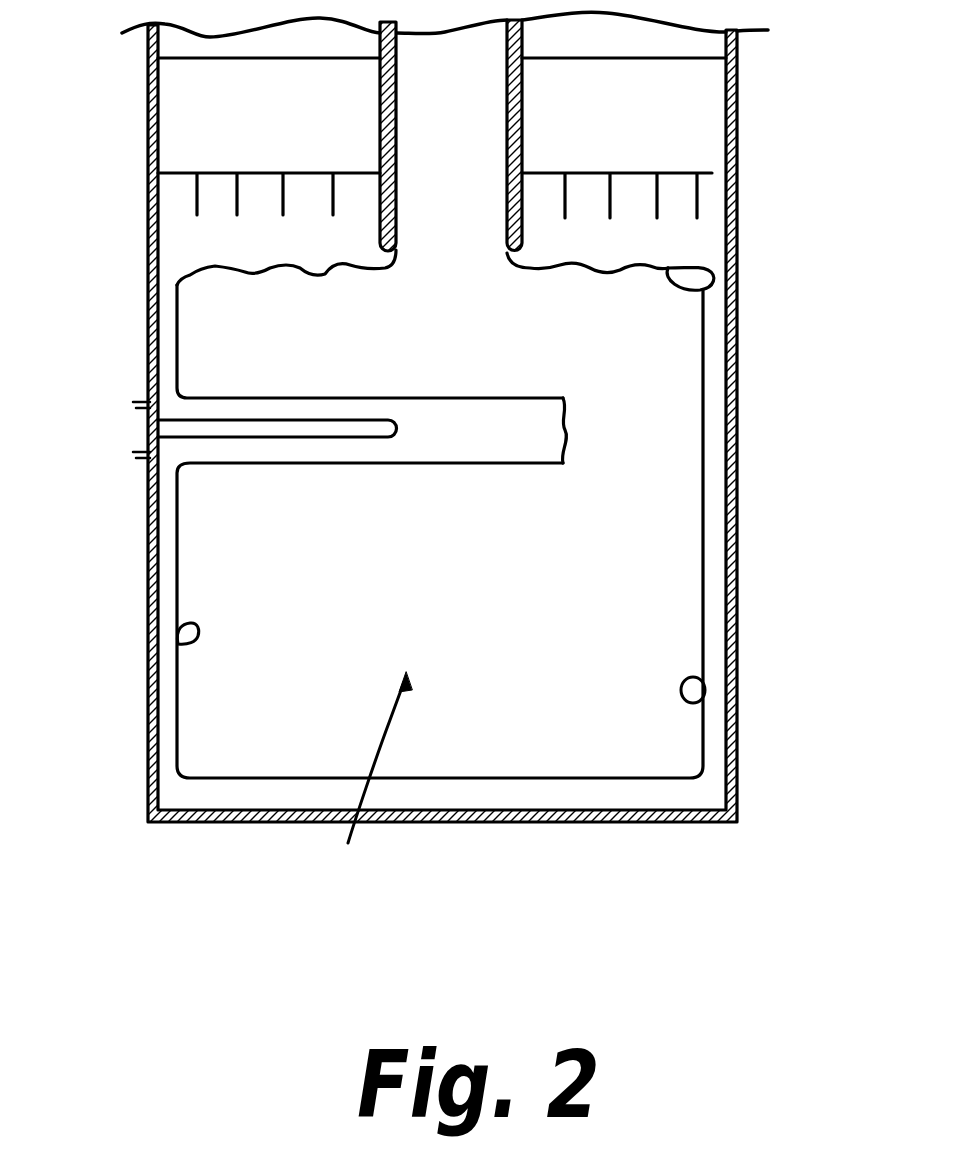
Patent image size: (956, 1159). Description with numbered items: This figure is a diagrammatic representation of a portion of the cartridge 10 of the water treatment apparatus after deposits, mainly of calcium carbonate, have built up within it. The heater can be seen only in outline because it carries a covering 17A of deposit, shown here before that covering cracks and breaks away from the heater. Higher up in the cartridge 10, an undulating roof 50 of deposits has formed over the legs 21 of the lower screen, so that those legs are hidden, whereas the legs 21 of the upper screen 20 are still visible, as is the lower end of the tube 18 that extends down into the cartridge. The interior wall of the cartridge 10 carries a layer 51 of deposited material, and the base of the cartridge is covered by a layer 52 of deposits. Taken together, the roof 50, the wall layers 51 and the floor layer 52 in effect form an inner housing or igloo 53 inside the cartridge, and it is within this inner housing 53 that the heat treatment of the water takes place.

The cartridge 10 is at (748, 593).
The tube 18 is at (522, 116).
The upper screen 20 is at (710, 173).
The legs 21 is at (193, 207).
The roof 50 is at (712, 284).
The covering 17A is at (507, 398).
The layer 51 is at (195, 645).
The layer 52 is at (653, 797).
The inner housing 53 is at (368, 783).